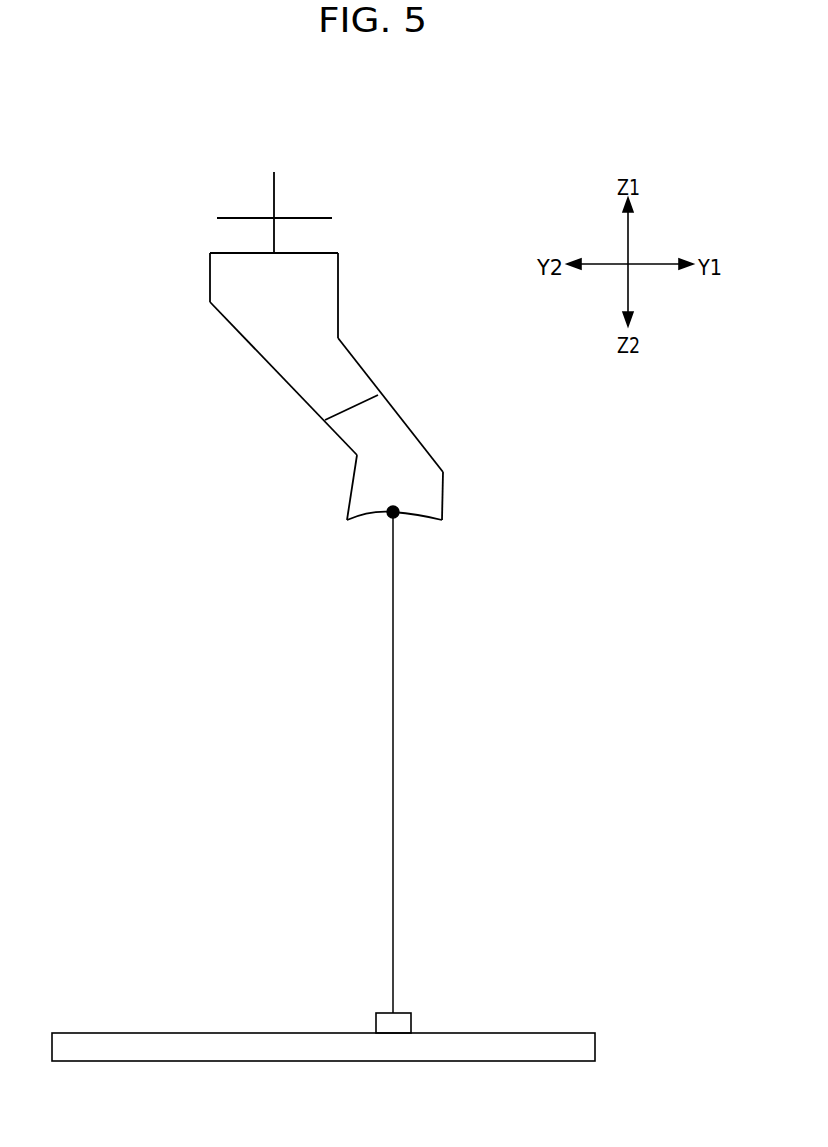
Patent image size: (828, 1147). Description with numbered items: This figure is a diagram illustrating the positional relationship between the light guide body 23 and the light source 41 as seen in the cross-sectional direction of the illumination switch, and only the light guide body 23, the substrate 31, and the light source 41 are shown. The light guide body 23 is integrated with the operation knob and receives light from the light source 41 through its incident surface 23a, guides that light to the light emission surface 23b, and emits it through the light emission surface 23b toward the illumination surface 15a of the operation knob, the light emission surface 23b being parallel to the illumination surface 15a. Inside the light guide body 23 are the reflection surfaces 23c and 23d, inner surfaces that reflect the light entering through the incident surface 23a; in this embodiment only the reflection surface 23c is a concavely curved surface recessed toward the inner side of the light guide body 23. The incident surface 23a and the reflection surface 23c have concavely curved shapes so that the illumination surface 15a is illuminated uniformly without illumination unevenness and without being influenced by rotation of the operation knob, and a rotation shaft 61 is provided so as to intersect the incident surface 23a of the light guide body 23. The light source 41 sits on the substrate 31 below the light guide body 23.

The illumination surface 15a is at (318, 218).
The light guide body 23 is at (371, 410).
The incident surface 23a is at (427, 520).
The light emission surface 23b is at (312, 254).
The reflection surface 23c is at (435, 455).
The reflection surface 23d is at (245, 338).
The rotation shaft 61 is at (387, 517).
The light source 41 is at (403, 1025).
The substrate 31 is at (475, 1061).